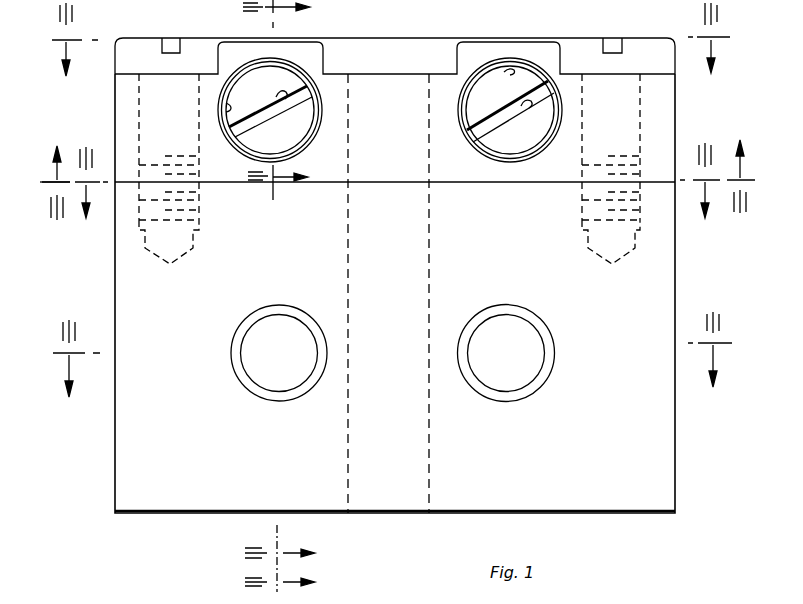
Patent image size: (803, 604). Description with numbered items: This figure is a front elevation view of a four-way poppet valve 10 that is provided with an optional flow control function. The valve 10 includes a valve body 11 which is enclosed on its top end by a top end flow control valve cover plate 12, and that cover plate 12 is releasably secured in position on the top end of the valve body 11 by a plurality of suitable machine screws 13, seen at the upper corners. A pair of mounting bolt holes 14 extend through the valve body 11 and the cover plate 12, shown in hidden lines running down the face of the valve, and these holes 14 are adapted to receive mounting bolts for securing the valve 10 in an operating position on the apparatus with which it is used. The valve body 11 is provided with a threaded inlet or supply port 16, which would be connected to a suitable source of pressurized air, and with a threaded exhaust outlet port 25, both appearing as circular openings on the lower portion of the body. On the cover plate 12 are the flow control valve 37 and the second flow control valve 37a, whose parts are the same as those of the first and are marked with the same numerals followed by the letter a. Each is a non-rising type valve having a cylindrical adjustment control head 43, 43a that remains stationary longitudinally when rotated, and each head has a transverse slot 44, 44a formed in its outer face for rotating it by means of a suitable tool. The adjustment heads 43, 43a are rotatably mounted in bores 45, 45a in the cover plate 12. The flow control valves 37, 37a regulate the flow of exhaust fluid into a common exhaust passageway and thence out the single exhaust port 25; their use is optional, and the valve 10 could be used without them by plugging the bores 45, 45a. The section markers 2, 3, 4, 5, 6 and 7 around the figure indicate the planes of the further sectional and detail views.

The four-way poppet valve 10 is at (103, 282).
The valve body 11 is at (123, 468).
The flow control valve cover plate 12 is at (477, 53).
The machine screws 13 is at (157, 58).
The mounting bolt holes 14 is at (428, 108).
The inlet or supply port 16 is at (262, 372).
The exhaust outlet port 25 is at (494, 378).
The flow control valve 37 is at (300, 127).
The second flow control valve 37a is at (506, 145).
The adjustment control head 43 is at (305, 108).
The adjustment control head 43a is at (530, 142).
The transverse slot 44 is at (278, 93).
The transverse slot 44a is at (532, 103).
The bore 45 is at (226, 106).
The bore 45a is at (512, 70).
The section line 2- 2 is at (397, 196).
The section line 3- 3 is at (392, 370).
The section line 4- 4 is at (398, 167).
The section line 5- 5 is at (287, 296).
The section line 6- 6 is at (391, 55).
The section line 7- 7 is at (288, 378).